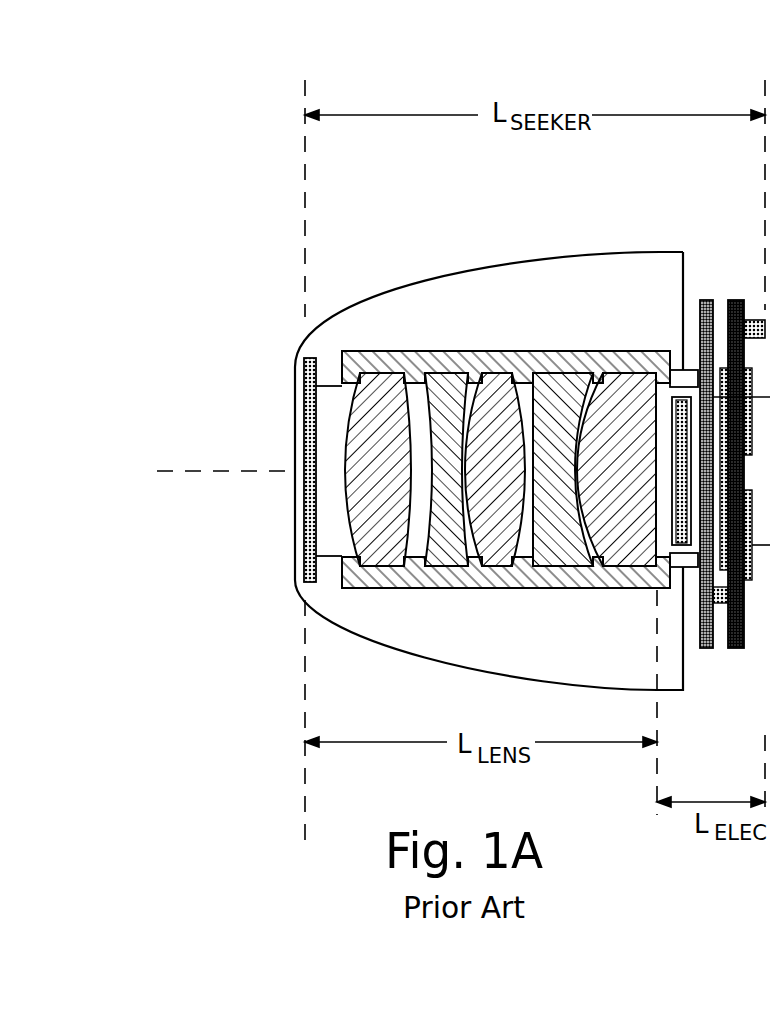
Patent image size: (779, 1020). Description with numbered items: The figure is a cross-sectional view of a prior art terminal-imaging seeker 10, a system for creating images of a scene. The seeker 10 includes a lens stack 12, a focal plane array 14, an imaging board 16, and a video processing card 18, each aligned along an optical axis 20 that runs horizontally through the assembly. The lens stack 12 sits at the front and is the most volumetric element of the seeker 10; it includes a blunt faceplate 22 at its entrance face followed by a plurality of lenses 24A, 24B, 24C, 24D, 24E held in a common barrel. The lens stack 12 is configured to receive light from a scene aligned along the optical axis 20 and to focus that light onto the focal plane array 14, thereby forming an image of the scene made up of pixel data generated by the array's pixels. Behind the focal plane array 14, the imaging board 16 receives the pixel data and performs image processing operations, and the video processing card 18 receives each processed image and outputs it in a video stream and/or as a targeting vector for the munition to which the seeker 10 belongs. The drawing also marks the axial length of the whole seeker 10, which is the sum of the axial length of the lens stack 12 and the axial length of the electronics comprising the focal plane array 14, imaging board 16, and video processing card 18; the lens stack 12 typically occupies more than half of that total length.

The terminal-imaging seeker 10 is at (460, 228).
The lens stack 12 is at (657, 633).
The focal plane array 14 is at (670, 516).
The imaging board 16 is at (704, 300).
The video processing card 18 is at (737, 650).
The optical axis 20 is at (223, 472).
The blunt faceplate 22 is at (290, 430).
The lens 24A is at (398, 460).
The lens 24B is at (448, 543).
The lens 24C is at (519, 460).
The lens 24D is at (552, 403).
The lens 24E is at (641, 460).